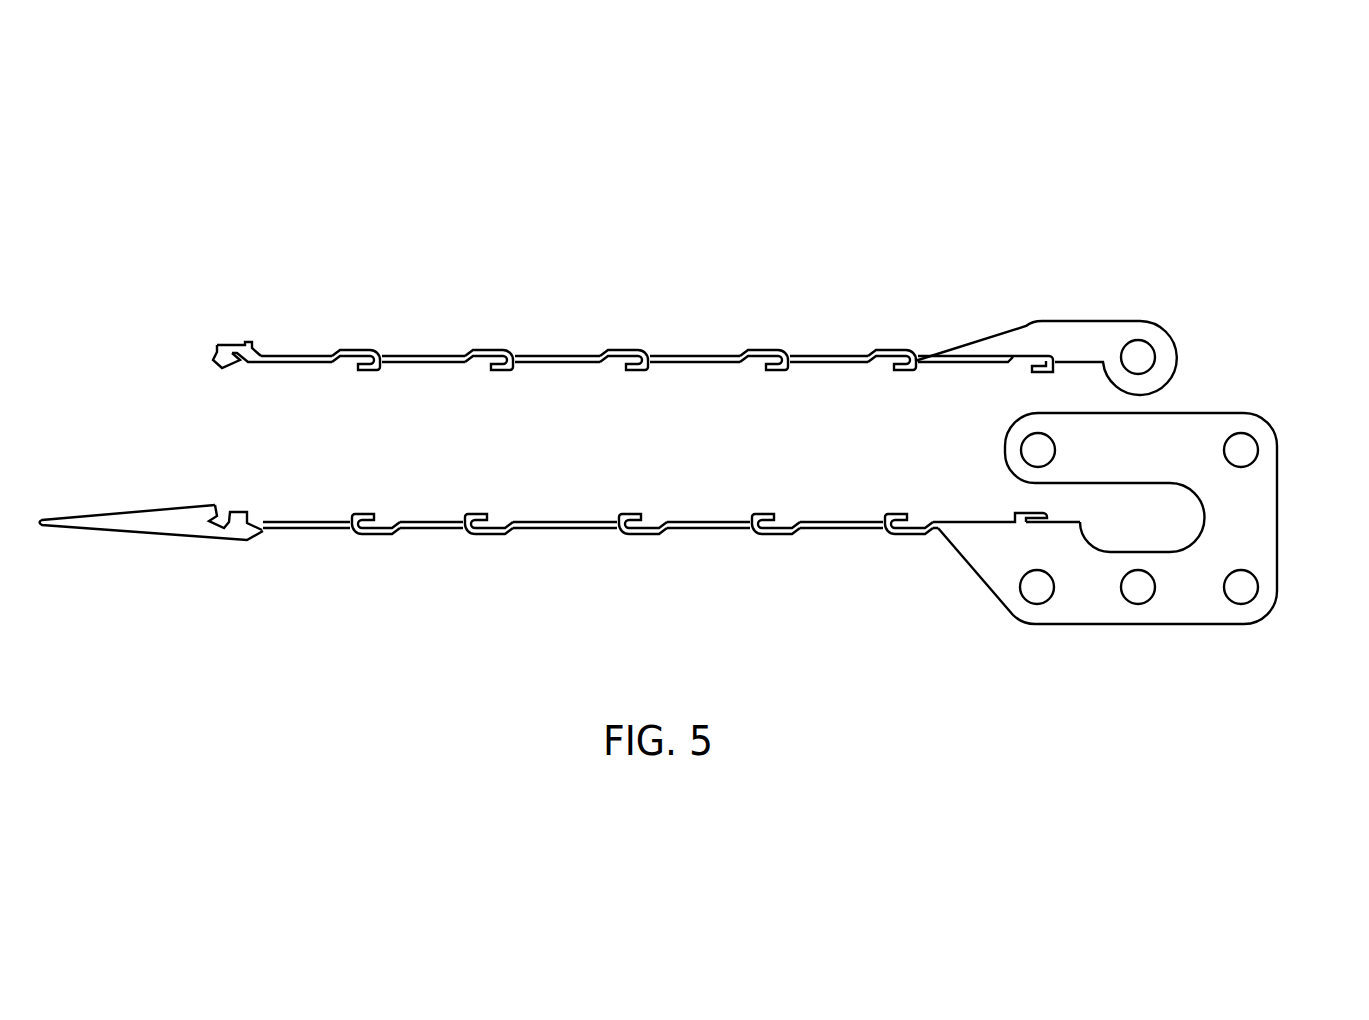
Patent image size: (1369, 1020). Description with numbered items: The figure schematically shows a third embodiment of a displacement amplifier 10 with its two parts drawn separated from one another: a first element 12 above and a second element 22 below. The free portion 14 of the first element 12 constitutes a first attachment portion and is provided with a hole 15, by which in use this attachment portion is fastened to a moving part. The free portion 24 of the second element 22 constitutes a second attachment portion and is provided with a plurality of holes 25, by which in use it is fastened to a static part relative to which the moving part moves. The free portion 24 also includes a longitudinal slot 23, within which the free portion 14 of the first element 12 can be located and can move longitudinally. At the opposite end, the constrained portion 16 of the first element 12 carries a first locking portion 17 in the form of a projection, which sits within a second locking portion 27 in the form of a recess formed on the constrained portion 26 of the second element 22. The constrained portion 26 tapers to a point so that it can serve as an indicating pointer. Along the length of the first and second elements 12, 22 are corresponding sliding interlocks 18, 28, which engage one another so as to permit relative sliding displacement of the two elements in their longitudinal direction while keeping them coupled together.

The displacement amplifier 10 is at (699, 390).
The first element 12 is at (572, 325).
The free portion of the first element 14 is at (1179, 335).
The hole 15 is at (1138, 350).
The constrained portion of the first element 16 is at (215, 345).
The first locking portion 17 is at (224, 370).
The sliding interlocks 18 is at (508, 348).
The second element 22 is at (548, 550).
The longitudinal slot 23 is at (1100, 512).
The free portion of the second element 24 is at (1170, 605).
The holes 25 is at (1243, 588).
The constrained portion of the second element 26 is at (173, 540).
The second locking portion 27 is at (230, 530).
The sliding interlocks 28 is at (478, 532).